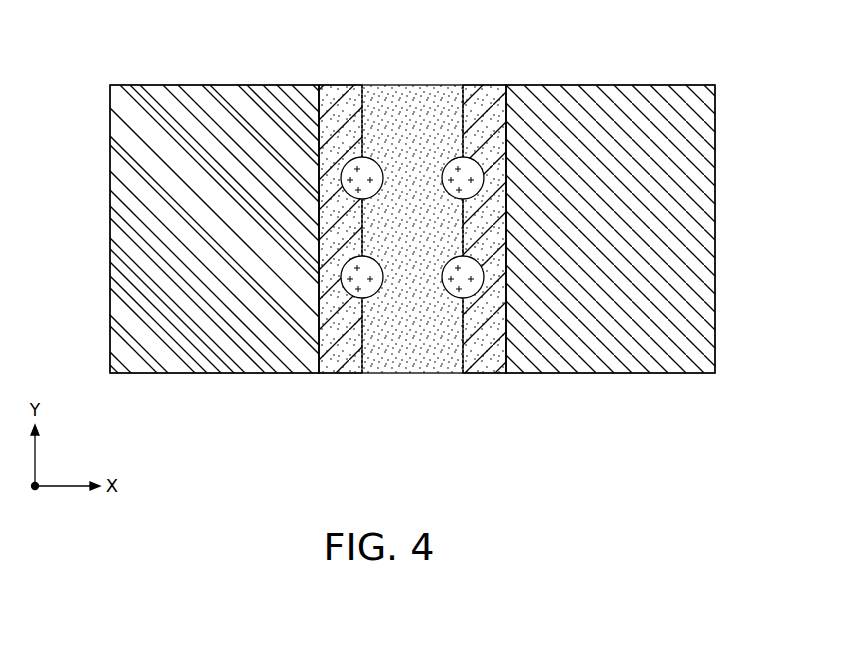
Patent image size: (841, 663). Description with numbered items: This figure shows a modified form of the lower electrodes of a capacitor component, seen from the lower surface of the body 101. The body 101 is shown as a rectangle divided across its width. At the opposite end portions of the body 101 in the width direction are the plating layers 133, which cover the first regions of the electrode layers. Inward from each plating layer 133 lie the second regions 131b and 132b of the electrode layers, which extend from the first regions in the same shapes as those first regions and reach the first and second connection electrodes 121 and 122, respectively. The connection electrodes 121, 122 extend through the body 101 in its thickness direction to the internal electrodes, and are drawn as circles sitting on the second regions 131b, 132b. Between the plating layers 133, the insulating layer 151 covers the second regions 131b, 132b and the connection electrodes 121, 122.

The body 101 is at (599, 85).
The first connection electrode 121 is at (338, 142).
The second connection electrode 122 is at (485, 140).
The second region of the first electrode layer 131b is at (343, 354).
The second region of the second electrode layer 132b is at (487, 357).
The plating layer 133 is at (198, 358).
The insulating layer 151 is at (413, 357).